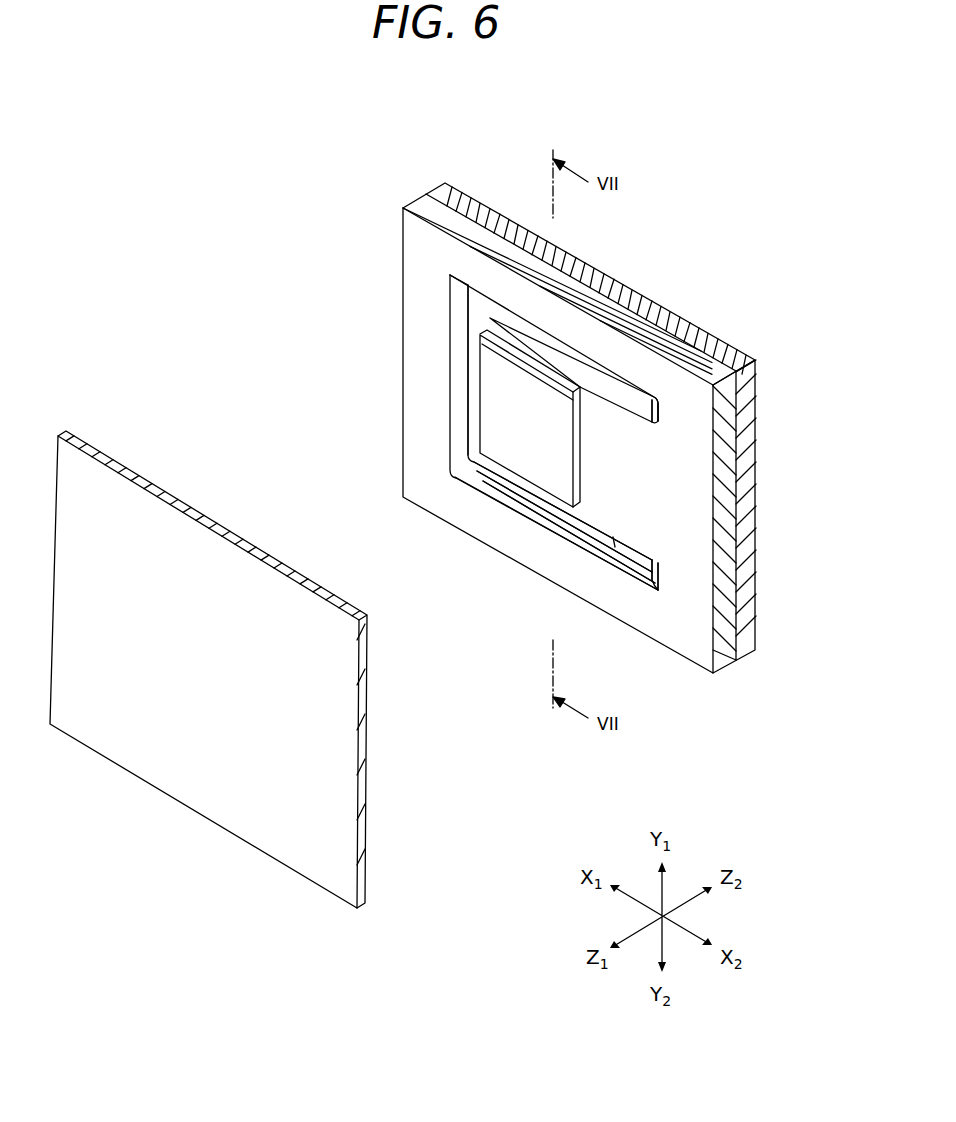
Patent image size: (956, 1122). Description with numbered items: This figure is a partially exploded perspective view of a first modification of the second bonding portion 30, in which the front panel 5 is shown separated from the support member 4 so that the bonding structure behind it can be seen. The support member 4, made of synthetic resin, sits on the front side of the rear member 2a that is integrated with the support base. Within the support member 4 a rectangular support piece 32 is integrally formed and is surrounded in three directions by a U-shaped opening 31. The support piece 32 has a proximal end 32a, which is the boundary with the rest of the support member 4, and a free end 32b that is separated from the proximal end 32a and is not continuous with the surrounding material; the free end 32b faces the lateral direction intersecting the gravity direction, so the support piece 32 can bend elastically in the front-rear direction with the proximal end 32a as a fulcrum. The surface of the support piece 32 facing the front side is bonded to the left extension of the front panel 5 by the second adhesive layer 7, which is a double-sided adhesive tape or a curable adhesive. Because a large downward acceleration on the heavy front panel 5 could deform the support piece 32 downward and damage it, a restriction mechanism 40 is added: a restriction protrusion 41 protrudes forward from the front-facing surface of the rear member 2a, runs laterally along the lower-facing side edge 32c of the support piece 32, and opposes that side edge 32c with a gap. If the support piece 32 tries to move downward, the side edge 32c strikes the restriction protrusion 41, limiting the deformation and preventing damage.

The second bonding portion 30 is at (246, 262).
The support member 4 is at (410, 257).
The rear member 2a is at (638, 307).
The U-shaped opening 31 is at (537, 333).
The support piece 32 is at (627, 453).
The proximal end 32a is at (655, 557).
The free end 32b is at (480, 333).
The side edge 32c is at (617, 562).
The second adhesive layer 7 is at (505, 427).
The restriction mechanism 40 is at (527, 514).
The restriction protrusion 41 is at (502, 488).
The front panel 5 is at (141, 755).